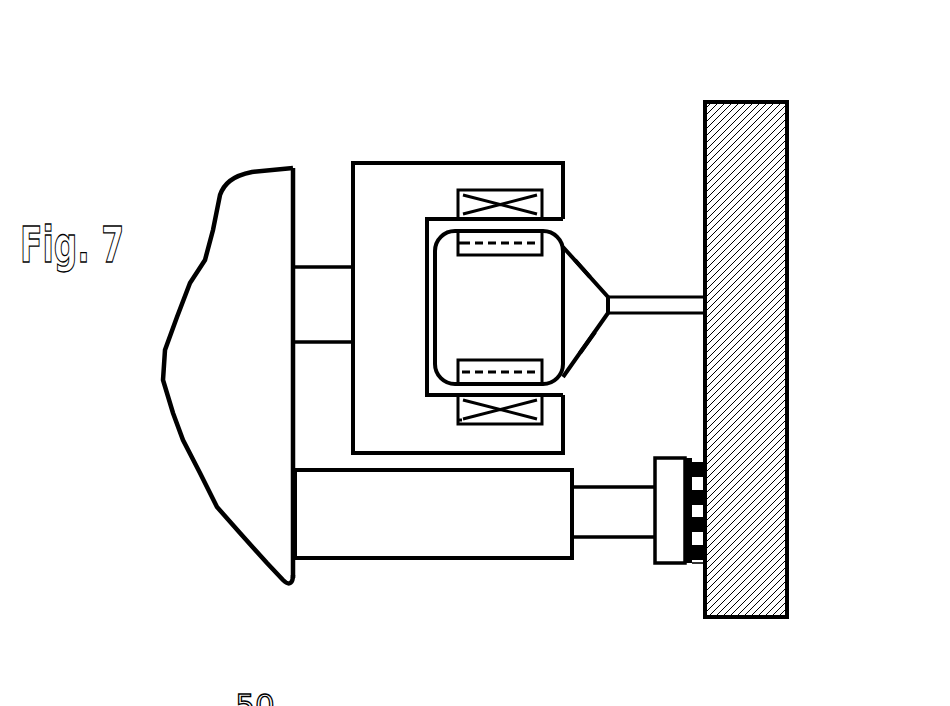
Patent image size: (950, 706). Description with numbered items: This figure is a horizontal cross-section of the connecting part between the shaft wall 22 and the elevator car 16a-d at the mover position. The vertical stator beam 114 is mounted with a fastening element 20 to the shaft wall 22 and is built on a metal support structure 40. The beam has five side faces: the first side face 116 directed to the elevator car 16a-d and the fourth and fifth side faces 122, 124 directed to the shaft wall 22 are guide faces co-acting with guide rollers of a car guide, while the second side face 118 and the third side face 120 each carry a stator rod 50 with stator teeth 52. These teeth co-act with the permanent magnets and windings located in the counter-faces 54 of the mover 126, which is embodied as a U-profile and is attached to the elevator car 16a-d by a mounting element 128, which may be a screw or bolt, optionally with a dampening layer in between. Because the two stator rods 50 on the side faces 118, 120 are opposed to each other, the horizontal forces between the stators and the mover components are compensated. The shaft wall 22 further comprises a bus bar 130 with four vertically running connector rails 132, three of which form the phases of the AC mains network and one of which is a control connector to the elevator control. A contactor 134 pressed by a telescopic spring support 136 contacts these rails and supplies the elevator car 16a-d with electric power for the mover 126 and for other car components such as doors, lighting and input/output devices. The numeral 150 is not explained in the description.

The elevator car 16a-d is at (227, 255).
The mover 126 is at (373, 242).
The support structure 40 is at (477, 305).
The stator rod 50 is at (457, 385).
The counter-face 54 is at (485, 198).
The stator teeth 52 is at (530, 232).
The second side face 118 is at (473, 240).
The vertical stator beam 114 is at (587, 228).
The fourth side face 122 is at (590, 267).
The fastening element 20 is at (657, 305).
The fifth side face 124 is at (592, 332).
The shaft wall 22 is at (752, 152).
The first side face 116 is at (432, 308).
The mounting element 128 is at (313, 304).
The third side face 120 is at (472, 418).
The telescopic spring support 136 is at (447, 528).
The contactor 134 is at (670, 512).
The connector rails 132 is at (705, 505).
The bus bar 130 is at (693, 575).
The sensor 150 is at (159, 696).